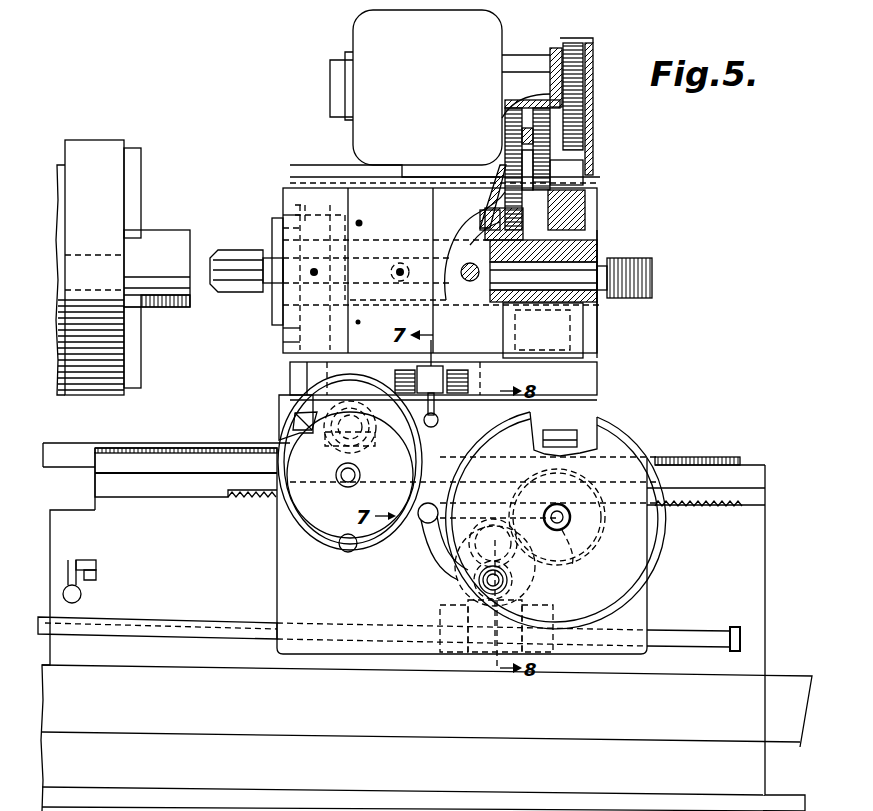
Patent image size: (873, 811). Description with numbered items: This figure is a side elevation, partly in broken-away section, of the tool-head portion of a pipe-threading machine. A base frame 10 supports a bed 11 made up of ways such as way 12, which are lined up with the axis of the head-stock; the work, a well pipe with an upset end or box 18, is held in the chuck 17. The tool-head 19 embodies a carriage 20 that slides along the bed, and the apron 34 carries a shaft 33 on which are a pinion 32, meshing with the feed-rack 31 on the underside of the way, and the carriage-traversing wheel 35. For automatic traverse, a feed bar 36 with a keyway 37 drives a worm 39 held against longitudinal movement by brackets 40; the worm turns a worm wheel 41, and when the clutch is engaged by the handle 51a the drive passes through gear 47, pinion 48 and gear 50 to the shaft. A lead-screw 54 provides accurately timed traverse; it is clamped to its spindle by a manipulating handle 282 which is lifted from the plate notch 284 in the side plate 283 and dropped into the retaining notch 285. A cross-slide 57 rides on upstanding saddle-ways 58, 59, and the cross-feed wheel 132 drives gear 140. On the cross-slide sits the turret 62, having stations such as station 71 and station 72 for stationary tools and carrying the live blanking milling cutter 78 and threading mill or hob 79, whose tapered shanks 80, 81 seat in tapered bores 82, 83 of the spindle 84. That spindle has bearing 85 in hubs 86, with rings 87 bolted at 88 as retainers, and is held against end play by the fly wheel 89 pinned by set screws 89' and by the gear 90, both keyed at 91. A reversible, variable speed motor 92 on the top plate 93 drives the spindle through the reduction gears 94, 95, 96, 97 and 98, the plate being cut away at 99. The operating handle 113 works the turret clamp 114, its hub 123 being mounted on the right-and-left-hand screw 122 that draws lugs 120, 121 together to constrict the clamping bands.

The base frame 10 is at (752, 608).
The bed 11 is at (758, 466).
The way 12 is at (726, 462).
The chuck 17 is at (138, 152).
The upset end or box 18 is at (160, 307).
The tool-head 19 is at (283, 178).
The carriage 20 is at (279, 394).
The feed-rack 31 is at (683, 508).
The pinion 32 is at (602, 546).
The shaft 33 is at (568, 520).
The apron 34 is at (277, 582).
The carriage-traversing wheel 35 is at (622, 428).
The feed bar 36 is at (177, 629).
The keyway 37 is at (204, 618).
The worm 39 is at (490, 652).
The brackets 40 is at (455, 652).
The worm wheel 41 is at (480, 582).
The gear 47 is at (487, 594).
The pinion 48 is at (460, 562).
The gear 50 is at (568, 565).
The handle 51a is at (450, 553).
The lead-screw 54 is at (68, 446).
The cross-slide 57 is at (288, 403).
The saddle-way 58 is at (310, 417).
The saddle-way 59 is at (545, 427).
The turret 62 is at (290, 342).
The station 71 is at (560, 342).
The station 72 is at (290, 328).
The blanking milling cutter 78 is at (238, 250).
The threading mill or hob 79 is at (636, 258).
The tapered shank 80 is at (275, 228).
The tapered shank 81 is at (585, 270).
The tapered bore 82 is at (272, 300).
The tapered bore 83 is at (597, 292).
The spindle 84 is at (545, 218).
The bearing 85 is at (555, 205).
The hub 86 is at (285, 207).
The ring 87 is at (285, 215).
The bolt 88 is at (598, 238).
The fly wheel or inertia mass 89 is at (318, 214).
The set screw 89' is at (443, 296).
The gear 90 is at (570, 177).
The key 91 is at (480, 240).
The reversible, variable speed motor 92 is at (368, 28).
The top plate 93 is at (343, 176).
The gear 94 is at (583, 100).
The gear 95 is at (540, 135).
The gear 96 is at (550, 113).
The gear 97 is at (555, 145).
The gear 98 is at (505, 142).
The cut-away 99 is at (560, 158).
The operating handle 113 is at (434, 408).
The turret clamp 114 is at (585, 374).
The lug 120 is at (395, 372).
The lug 121 is at (455, 370).
The right-and-left-hand screw 122 is at (448, 372).
The hub 123 is at (432, 340).
The cross-feed wheel 132 is at (313, 537).
The gear 140 is at (290, 460).
The manipulating handle 282 is at (72, 562).
The side plate 283 is at (88, 494).
The plate notch 284 is at (97, 565).
The retaining notch 285 is at (97, 578).